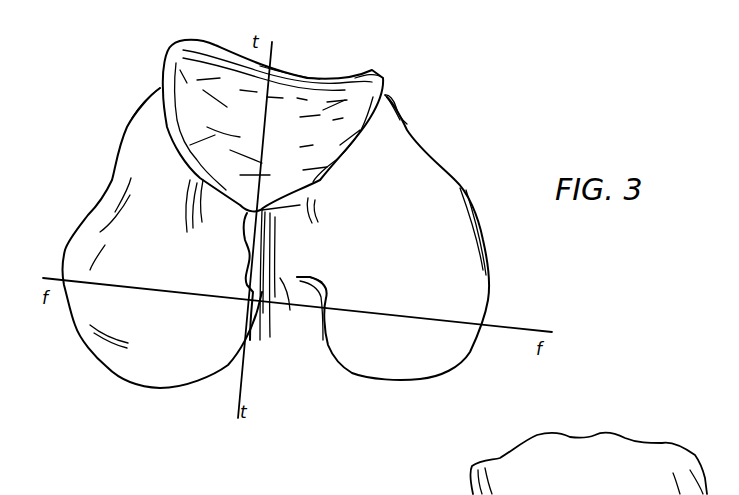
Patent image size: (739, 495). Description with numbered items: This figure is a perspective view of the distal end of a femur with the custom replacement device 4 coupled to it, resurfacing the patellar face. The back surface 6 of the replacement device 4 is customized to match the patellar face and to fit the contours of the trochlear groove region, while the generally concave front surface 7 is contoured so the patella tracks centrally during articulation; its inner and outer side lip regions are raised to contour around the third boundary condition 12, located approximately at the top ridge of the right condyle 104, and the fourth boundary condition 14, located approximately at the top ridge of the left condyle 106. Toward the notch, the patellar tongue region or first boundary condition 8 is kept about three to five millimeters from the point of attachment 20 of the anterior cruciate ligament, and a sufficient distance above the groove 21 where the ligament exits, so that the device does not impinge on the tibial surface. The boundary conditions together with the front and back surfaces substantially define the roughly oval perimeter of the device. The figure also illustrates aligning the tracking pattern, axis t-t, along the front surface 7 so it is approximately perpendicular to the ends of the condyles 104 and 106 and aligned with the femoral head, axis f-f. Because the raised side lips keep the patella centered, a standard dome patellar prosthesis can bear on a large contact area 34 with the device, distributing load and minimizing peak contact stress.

The replacement device 4 is at (294, 74).
The back surface 6 is at (352, 156).
The front surface 7 is at (213, 138).
The first boundary condition 8 is at (282, 212).
The third boundary condition 12 is at (172, 64).
The fourth boundary condition 14 is at (373, 70).
The point of attachment of the anterior cruciate ligament 20 is at (279, 276).
The groove 21 is at (291, 255).
The contact area 34 is at (247, 257).
The right condyle 104 is at (160, 90).
The left condyle 106 is at (400, 121).